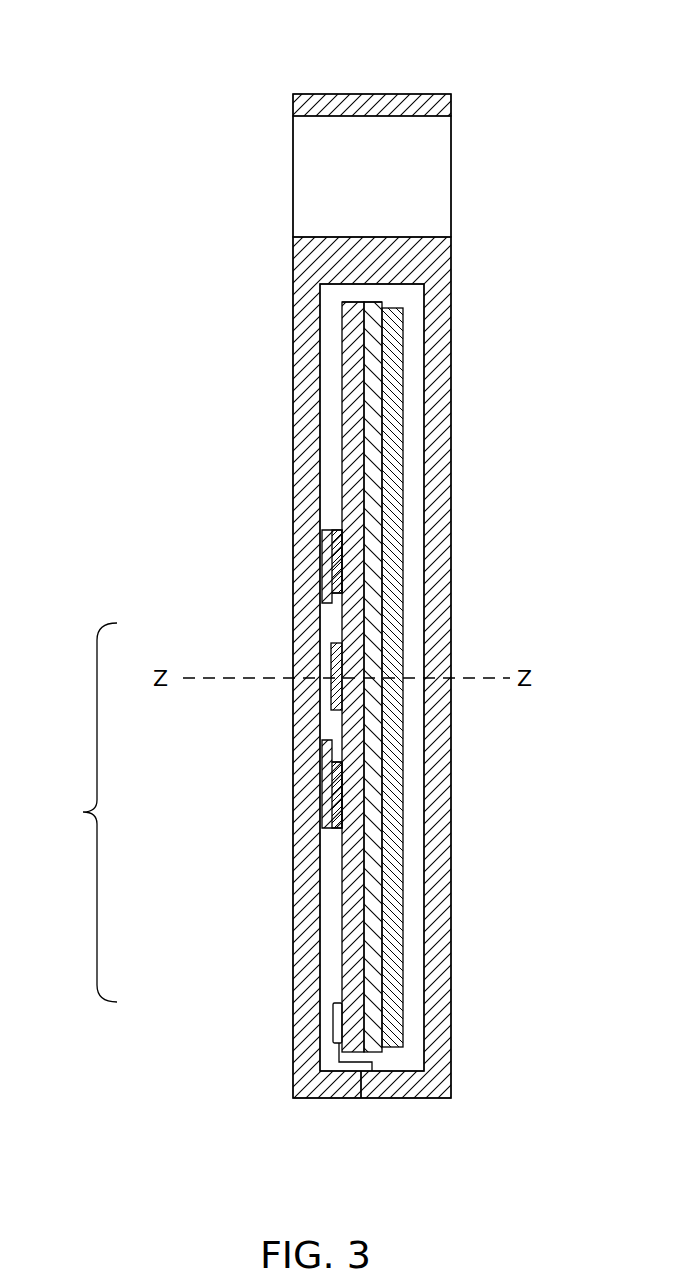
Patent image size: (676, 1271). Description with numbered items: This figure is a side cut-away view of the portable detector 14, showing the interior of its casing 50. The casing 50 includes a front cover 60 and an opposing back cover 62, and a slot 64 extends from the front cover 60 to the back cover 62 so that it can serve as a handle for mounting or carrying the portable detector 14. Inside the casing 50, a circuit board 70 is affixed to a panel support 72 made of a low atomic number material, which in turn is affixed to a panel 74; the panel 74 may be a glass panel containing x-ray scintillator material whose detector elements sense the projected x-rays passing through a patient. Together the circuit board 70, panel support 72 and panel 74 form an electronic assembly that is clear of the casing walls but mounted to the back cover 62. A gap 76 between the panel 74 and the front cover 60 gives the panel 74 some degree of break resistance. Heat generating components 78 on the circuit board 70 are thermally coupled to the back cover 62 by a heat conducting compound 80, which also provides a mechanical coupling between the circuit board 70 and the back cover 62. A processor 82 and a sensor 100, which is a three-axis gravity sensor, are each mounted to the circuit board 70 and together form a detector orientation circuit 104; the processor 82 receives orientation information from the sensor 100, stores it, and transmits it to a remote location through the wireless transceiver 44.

The portable detector 14 is at (268, 151).
The transceiver 44 is at (366, 1100).
The casing 50 is at (368, 93).
The front cover 60 is at (451, 548).
The back cover 62 is at (293, 432).
The slot 64 is at (293, 220).
The circuit board 70 is at (349, 358).
The panel support 72 is at (372, 302).
The panel 74 is at (398, 333).
The gap 76 is at (415, 480).
The heat generating components 78 is at (327, 540).
The heat conducting compound 80 is at (332, 572).
The processor 82 is at (337, 1020).
The sensor 100 is at (335, 663).
The detector orientation circuit 104 is at (77, 812).